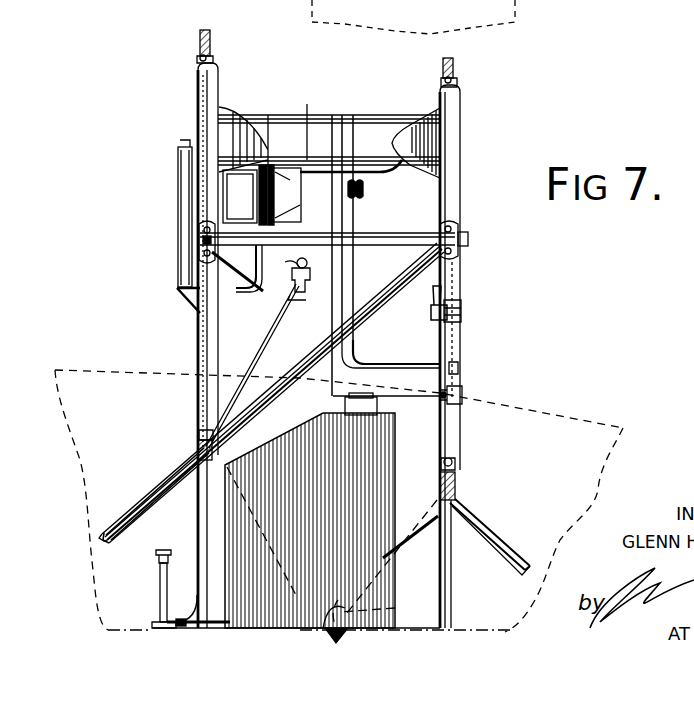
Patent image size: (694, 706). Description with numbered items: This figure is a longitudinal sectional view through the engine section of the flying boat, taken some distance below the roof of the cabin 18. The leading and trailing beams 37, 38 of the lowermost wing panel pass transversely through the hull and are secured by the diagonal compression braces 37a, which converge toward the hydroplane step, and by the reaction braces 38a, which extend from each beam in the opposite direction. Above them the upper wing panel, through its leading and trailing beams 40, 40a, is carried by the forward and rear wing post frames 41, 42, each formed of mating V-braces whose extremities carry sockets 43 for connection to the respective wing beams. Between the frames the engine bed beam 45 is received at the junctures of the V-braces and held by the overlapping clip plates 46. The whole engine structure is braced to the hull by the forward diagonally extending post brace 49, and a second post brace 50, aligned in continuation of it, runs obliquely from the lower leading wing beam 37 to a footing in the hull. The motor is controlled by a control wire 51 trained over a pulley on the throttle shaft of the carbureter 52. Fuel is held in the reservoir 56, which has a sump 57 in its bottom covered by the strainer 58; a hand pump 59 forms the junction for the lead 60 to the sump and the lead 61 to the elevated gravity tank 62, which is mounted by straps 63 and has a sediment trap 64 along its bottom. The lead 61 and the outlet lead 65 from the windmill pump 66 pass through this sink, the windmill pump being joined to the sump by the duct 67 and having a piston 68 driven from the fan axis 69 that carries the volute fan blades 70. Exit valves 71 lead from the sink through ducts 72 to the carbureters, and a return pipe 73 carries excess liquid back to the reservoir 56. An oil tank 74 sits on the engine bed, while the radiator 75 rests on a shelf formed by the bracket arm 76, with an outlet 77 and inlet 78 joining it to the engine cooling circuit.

The cabin 18 is at (103, 376).
The leading wing beam 37 is at (199, 448).
The diagonal compression brace 37a is at (268, 522).
The trailing wing beam 38 is at (457, 481).
The reaction brace 38a is at (496, 530).
The leading beam of upper wing panel 40 is at (204, 30).
The trailing beam of upper wing panel 40a is at (454, 60).
The forward wing post frame 41 is at (198, 113).
The rear wing post frame 42 is at (462, 152).
The socket 43 is at (199, 61).
The engine bed beam 45 is at (378, 245).
The overlapping clip plate 46 is at (199, 232).
The forward diagonally extending post brace 49 is at (372, 316).
The second post brace 50 is at (126, 518).
The control wire 51 is at (258, 336).
The carbureter 52 is at (299, 298).
The reservoir 56 is at (392, 542).
The sump 57 is at (350, 633).
The strainer 58 is at (395, 608).
The hand pump 59 is at (160, 608).
The lead 60 is at (198, 604).
The lead 61 is at (353, 280).
The gravity tank 62 is at (382, 123).
The strap 63 is at (455, 118).
The sediment trap 64 is at (286, 195).
The outlet lead 65 is at (356, 193).
The windmill pump 66 is at (460, 394).
The duct 67 is at (414, 397).
The piston 68 is at (458, 373).
The fan axis 69 is at (442, 305).
The volute fan blade 70 is at (462, 326).
The exit valve 71 is at (352, 200).
The duct 72 is at (228, 263).
The return pipe 73 is at (333, 320).
The oil tank 74 is at (245, 195).
The radiator 75 is at (178, 244).
The bracket arm 76 is at (182, 306).
The outlet 77 is at (237, 284).
The inlet 78 is at (318, 120).